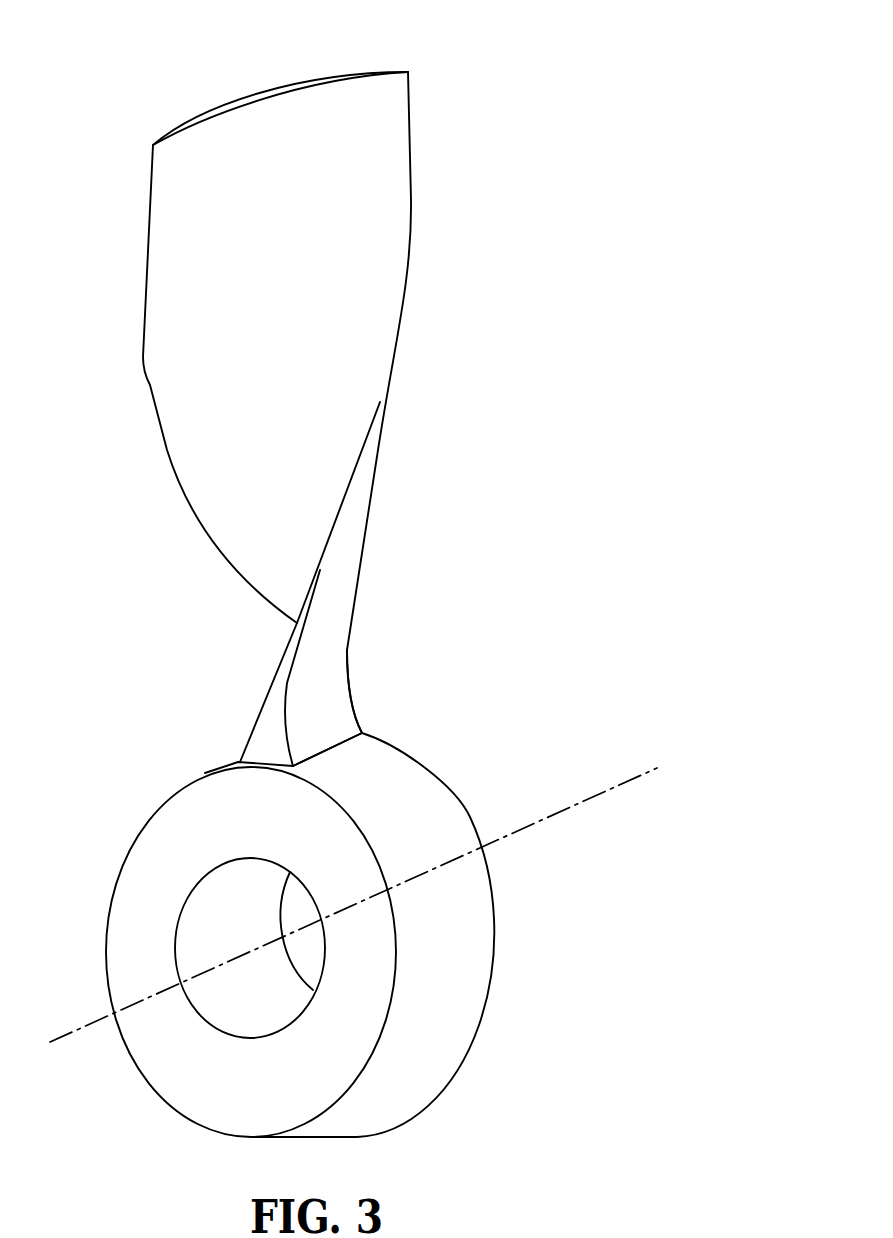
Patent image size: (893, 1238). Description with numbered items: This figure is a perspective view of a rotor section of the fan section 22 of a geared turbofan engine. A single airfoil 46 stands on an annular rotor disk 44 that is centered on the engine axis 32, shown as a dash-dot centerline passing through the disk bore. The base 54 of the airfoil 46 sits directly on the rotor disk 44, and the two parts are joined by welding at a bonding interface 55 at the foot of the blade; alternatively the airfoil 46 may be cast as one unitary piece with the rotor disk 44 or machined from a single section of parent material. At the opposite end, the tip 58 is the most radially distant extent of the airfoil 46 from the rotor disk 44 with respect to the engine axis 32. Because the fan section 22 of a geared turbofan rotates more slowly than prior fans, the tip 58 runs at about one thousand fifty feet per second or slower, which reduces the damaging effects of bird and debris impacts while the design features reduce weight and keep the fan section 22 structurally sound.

The fan section 22 is at (397, 569).
The engine axis 32 is at (625, 783).
The rotor disk 44 is at (492, 967).
The airfoil 46 is at (378, 393).
The base 54 is at (270, 742).
The bonding interface 55 is at (335, 740).
The tip 58 is at (278, 108).